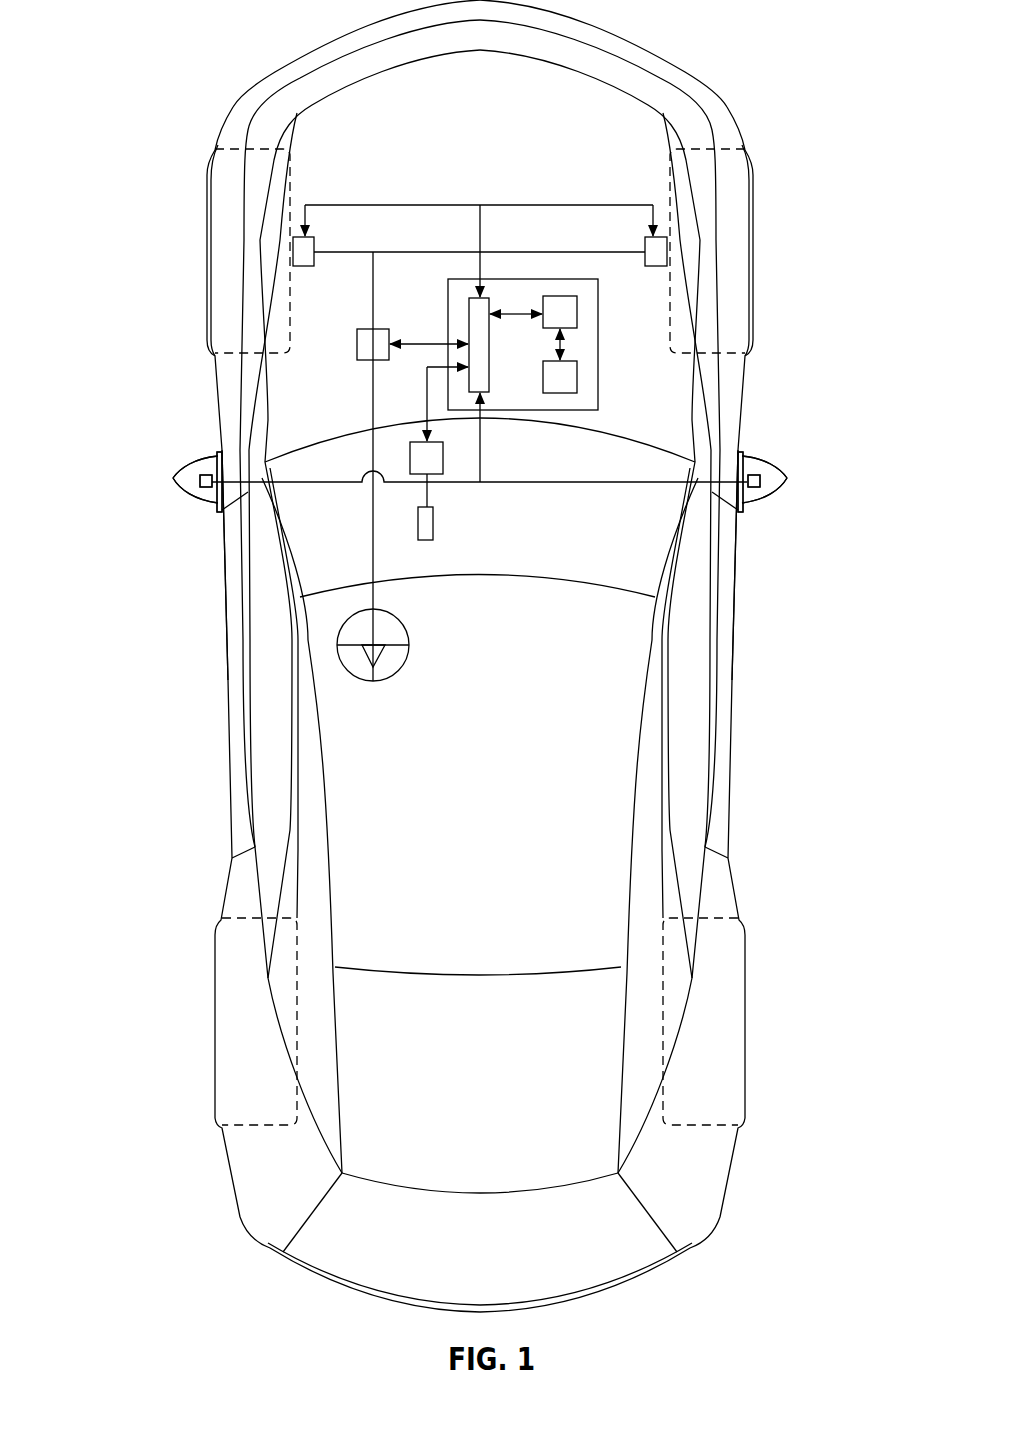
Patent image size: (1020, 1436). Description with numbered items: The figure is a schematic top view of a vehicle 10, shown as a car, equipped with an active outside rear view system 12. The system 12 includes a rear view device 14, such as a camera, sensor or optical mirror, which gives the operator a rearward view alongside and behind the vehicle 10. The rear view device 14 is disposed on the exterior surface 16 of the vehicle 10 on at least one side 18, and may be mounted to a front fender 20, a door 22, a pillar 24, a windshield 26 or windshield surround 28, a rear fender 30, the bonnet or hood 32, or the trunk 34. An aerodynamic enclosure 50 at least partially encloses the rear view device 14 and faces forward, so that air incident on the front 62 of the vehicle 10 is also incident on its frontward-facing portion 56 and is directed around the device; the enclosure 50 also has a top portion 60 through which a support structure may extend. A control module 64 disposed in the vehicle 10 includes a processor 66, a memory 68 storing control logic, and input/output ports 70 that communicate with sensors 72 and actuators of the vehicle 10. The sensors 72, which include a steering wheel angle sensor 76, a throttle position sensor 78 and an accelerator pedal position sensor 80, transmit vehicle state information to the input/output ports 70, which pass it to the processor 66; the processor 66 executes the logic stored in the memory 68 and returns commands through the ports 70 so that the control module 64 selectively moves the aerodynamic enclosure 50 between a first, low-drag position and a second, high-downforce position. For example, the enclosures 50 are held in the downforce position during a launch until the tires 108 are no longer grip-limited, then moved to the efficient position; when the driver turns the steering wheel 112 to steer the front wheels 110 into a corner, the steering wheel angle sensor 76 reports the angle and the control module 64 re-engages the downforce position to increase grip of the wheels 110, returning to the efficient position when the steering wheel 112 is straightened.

The vehicle 10 is at (774, 292).
The active outside rear view system 12 is at (197, 482).
The rear view device 14 is at (197, 482).
The exterior surface 16 is at (475, 503).
The side 18 is at (173, 496).
The front fender 20 is at (227, 395).
The door 22 is at (231, 681).
The pillar 24 is at (370, 611).
The windshield 26 is at (625, 557).
The windshield surround 28 is at (370, 611).
The rear fender 30 is at (305, 1075).
The bonnet or hood 32 is at (658, 256).
The trunk 34 is at (360, 1242).
The aerodynamic enclosure 50 is at (476, 422).
The frontward-facing portion 56 is at (188, 470).
The top portion 60 is at (207, 472).
The front 62 is at (347, 489).
The control module 64 is at (598, 348).
The processor 66 is at (577, 312).
The memory 68 is at (577, 378).
The input/output ports 70 is at (469, 335).
The sensors 72 is at (315, 245).
The steering wheel angle sensor 76 is at (357, 343).
The throttle position sensor 78 is at (492, 453).
The accelerator pedal position sensor 80 is at (443, 458).
The tires 108 is at (252, 251).
The front wheels 110 is at (252, 251).
The steering wheel 112 is at (409, 650).